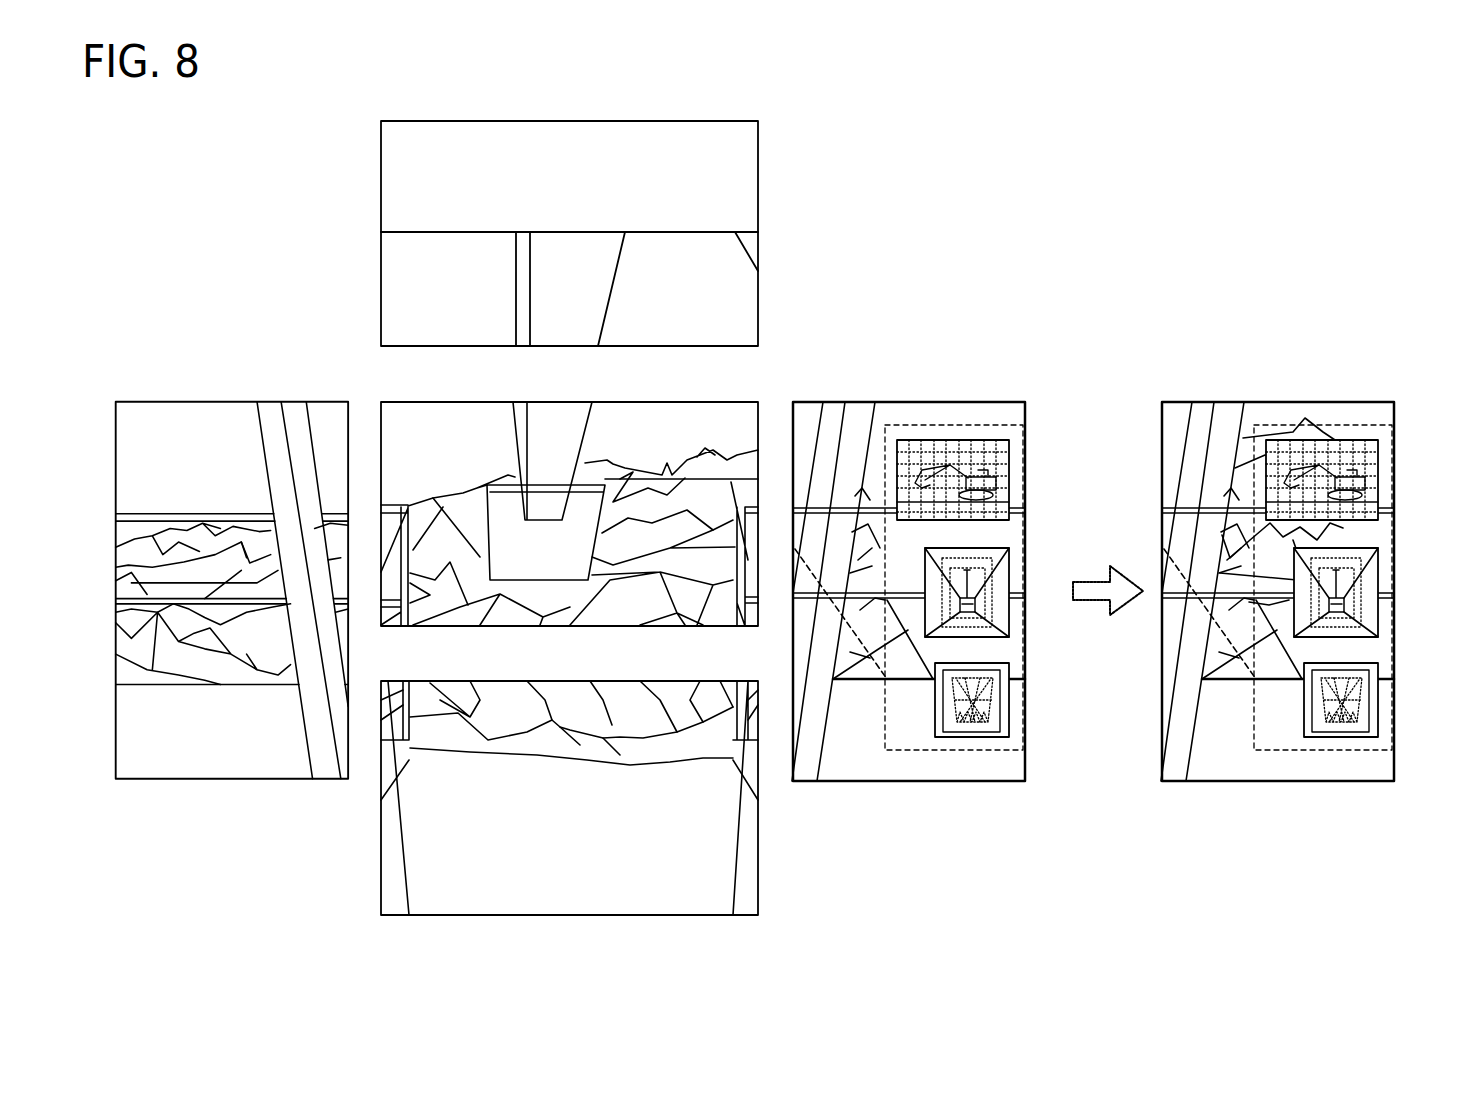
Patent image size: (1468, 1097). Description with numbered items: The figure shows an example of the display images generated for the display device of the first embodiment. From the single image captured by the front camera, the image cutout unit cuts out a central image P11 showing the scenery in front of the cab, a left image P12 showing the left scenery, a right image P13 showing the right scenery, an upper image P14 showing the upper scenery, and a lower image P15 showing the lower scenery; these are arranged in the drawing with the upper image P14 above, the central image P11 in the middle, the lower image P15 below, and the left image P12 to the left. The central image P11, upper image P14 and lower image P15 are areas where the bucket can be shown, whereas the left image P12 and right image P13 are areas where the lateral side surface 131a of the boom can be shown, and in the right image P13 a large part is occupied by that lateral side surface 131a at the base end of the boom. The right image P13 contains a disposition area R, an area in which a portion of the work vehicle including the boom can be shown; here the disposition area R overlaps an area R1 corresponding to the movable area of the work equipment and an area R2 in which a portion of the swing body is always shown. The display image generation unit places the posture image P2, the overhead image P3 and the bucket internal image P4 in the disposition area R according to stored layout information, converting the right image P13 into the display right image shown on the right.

The central image P11 is at (736, 400).
The left image P12 is at (213, 398).
The right image P13 is at (988, 782).
The upper image P14 is at (568, 120).
The lower image P15 is at (537, 917).
The posture image P2 is at (1010, 482).
The overhead image P3 is at (1010, 580).
The bucket internal image P4 is at (1010, 692).
The disposition area R is at (990, 425).
The area corresponding to the movable area of the work equipment R1 is at (872, 665).
The area in which a portion of the swing body is always shown R2 is at (1025, 762).
The lateral side surface 131a is at (957, 545).